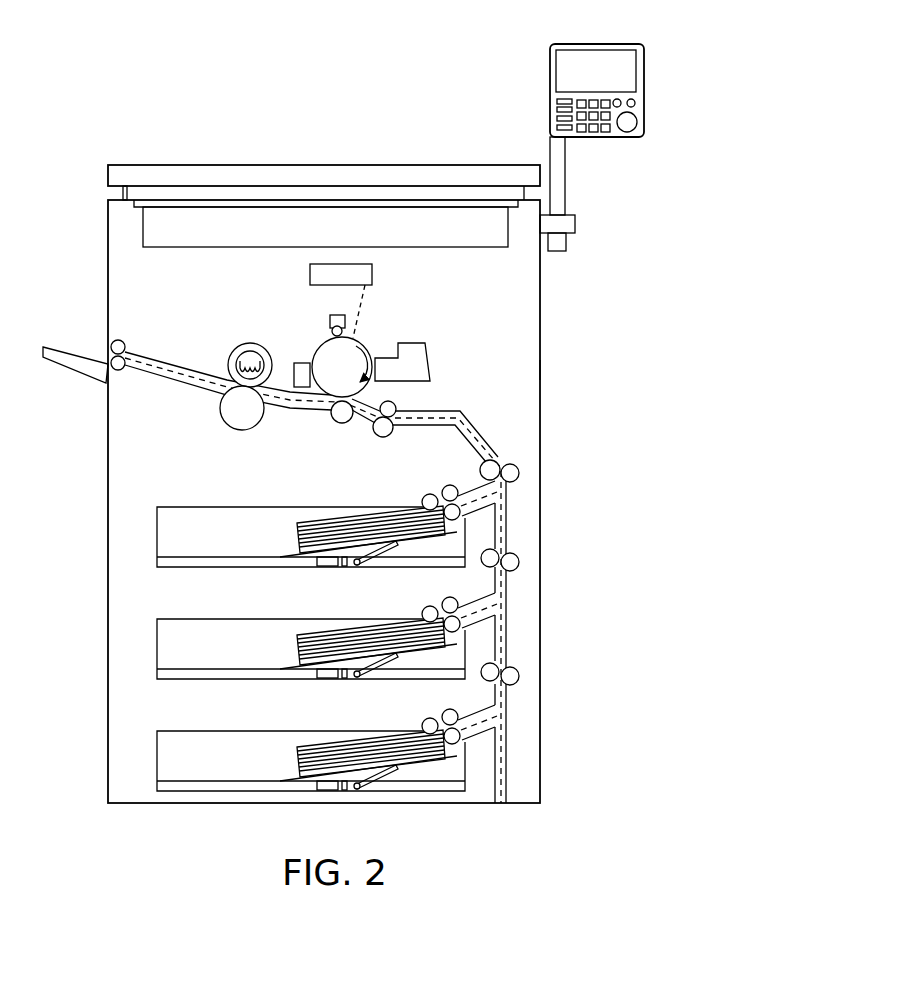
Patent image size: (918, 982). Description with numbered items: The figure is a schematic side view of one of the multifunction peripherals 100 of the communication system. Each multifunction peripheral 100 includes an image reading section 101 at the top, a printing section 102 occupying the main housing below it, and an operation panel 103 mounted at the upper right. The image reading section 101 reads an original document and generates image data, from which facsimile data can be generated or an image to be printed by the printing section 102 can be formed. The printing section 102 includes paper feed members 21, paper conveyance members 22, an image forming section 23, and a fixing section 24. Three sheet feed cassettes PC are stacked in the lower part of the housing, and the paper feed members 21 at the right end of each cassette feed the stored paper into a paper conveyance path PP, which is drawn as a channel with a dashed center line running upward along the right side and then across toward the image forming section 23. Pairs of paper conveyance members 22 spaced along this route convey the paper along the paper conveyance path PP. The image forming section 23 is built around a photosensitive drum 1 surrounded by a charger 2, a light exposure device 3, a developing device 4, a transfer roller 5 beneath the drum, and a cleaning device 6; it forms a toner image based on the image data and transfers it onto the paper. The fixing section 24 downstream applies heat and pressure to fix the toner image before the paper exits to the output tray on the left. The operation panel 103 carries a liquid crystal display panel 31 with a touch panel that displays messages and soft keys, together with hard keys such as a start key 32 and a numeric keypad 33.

The multifunction peripheral 100 is at (110, 148).
The image reading section 101 is at (510, 243).
The printing section 102 is at (513, 369).
The operation panel 103 is at (578, 125).
The liquid crystal display panel 31 is at (590, 56).
The start key 32 is at (628, 133).
The numeric keypad 33 is at (594, 134).
The photosensitive drum 1 is at (322, 351).
The charger 2 is at (331, 316).
The light exposure device 3 is at (308, 278).
The developing device 4 is at (430, 354).
The transfer roller 5 is at (334, 421).
The cleaning device 6 is at (303, 363).
The paper feed members 21 is at (420, 498).
The paper conveyance members 22 is at (126, 334).
The image forming section 23 is at (377, 321).
The fixing section 24 is at (217, 408).
The sheet feed cassettes PC is at (182, 506).
The paper conveyance path PP is at (487, 432).